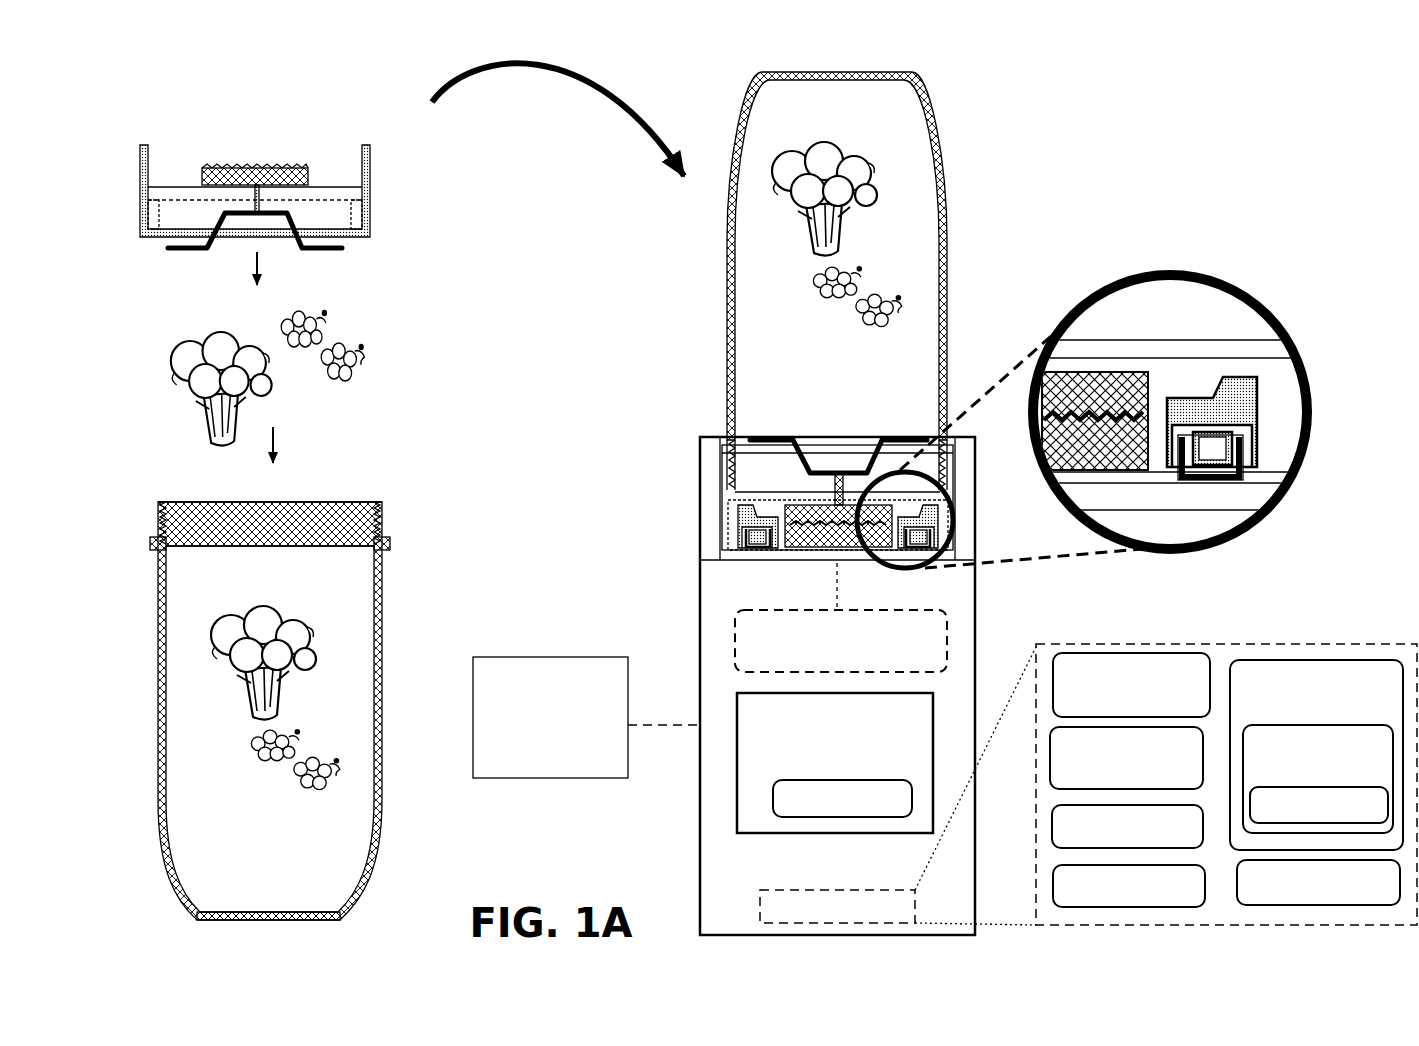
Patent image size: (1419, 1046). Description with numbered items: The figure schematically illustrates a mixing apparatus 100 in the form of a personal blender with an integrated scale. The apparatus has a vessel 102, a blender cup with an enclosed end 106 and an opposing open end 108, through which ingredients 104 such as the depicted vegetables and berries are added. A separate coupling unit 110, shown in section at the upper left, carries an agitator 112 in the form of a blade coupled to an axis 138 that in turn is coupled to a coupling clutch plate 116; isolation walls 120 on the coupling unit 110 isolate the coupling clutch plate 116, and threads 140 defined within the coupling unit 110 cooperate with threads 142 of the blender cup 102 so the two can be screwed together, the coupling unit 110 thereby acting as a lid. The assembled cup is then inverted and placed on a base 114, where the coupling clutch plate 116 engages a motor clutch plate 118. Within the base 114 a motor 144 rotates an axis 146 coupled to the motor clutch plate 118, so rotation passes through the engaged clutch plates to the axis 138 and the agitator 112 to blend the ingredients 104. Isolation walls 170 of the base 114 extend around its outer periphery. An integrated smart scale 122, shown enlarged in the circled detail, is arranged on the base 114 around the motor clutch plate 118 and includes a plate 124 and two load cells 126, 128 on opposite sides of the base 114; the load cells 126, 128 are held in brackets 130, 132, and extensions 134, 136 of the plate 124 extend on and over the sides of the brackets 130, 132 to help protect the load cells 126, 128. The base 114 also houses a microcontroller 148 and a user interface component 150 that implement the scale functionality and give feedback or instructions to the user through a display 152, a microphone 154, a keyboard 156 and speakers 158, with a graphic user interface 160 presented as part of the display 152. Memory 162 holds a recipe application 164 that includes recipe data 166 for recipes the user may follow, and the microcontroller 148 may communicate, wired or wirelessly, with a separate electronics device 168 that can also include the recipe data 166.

The mixing apparatus 100 is at (1102, 92).
The vessel 102 is at (545, 511).
The ingredients 104 is at (380, 342).
The enclosed end 106 is at (200, 920).
The open end 108 is at (269, 484).
The coupling unit 110 is at (466, 311).
The agitator 112 is at (185, 262).
The base 114 is at (875, 632).
The coupling clutch plate 116 is at (237, 160).
The motor clutch plate 118 is at (782, 543).
The isolation walls 120 is at (140, 163).
The integrated smart scale 122 is at (1213, 370).
The plate 124 is at (1247, 388).
The load cell 126 is at (758, 537).
The load cell 128 is at (1258, 440).
The bracket 130 is at (740, 547).
The bracket 132 is at (1242, 472).
The extension 134 is at (745, 530).
The extension 136 is at (1255, 452).
The axis 138 is at (258, 203).
The threads 140 is at (155, 207).
The threads 142 is at (155, 520).
The motor 144 is at (841, 641).
The axis 146 is at (842, 580).
The microcontroller 148 is at (1131, 685).
The user interface component 150 is at (1126, 758).
The display 152 is at (835, 763).
The microphone 154 is at (1127, 826).
The keyboard 156 is at (1129, 886).
The speakers 158 is at (1318, 882).
The graphic user interface 160 is at (842, 798).
The memory 162 is at (1316, 755).
The recipe application 164 is at (1318, 779).
The recipe data 166 is at (1319, 805).
The electronics device 168 is at (586, 717).
The isolation walls 170 is at (727, 512).